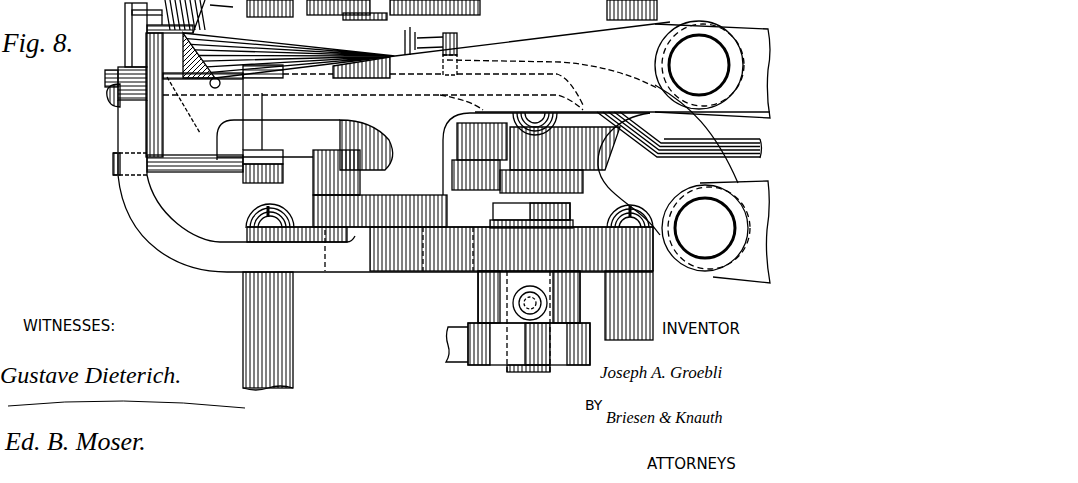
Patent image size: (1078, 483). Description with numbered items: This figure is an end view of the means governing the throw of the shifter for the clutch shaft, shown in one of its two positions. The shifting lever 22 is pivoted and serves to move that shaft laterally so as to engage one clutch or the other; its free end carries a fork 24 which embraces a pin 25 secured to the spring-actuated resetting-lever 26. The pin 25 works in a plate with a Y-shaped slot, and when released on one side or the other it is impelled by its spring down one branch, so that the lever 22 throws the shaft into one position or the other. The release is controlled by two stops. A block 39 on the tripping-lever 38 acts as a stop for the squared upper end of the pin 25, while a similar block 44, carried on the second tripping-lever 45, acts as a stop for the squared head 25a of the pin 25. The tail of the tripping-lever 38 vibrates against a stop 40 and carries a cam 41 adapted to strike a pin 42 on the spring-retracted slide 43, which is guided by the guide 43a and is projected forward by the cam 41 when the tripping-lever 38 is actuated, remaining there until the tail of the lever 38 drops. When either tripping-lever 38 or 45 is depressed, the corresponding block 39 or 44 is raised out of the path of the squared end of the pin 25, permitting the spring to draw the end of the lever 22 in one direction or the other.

The lever 22 is at (452, 362).
The fork 24 is at (333, 16).
The pin 25 is at (372, 21).
The squared head of the pin 25a is at (571, 213).
The resetting-lever 26 is at (478, 300).
The tripping-lever 38 is at (582, 69).
The block 39 is at (313, 196).
The stop 40 is at (146, 41).
The cam 41 is at (190, 68).
The pin 42 is at (220, 80).
The spring-retracted slide 43 is at (110, 94).
The guide 43a is at (250, 172).
The block 44 is at (486, 185).
The tripping-lever 45 is at (684, 198).